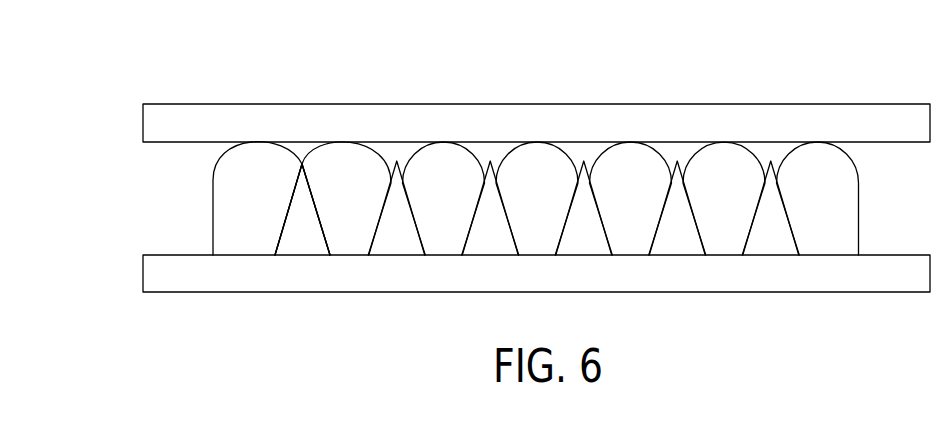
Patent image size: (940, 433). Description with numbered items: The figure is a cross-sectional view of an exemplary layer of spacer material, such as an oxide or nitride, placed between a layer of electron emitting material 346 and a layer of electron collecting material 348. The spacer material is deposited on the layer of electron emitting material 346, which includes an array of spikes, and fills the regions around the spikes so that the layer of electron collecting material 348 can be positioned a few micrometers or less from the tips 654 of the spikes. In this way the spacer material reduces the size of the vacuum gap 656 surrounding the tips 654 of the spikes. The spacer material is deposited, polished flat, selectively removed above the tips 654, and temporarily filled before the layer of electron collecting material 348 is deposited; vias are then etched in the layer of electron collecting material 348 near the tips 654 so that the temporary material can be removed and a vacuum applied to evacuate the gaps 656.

The layer of electron collecting material 348 is at (519, 134).
The layer of electron emitting material 346 is at (519, 284).
The vacuum gap 656 is at (287, 138).
The tips 654 is at (306, 144).